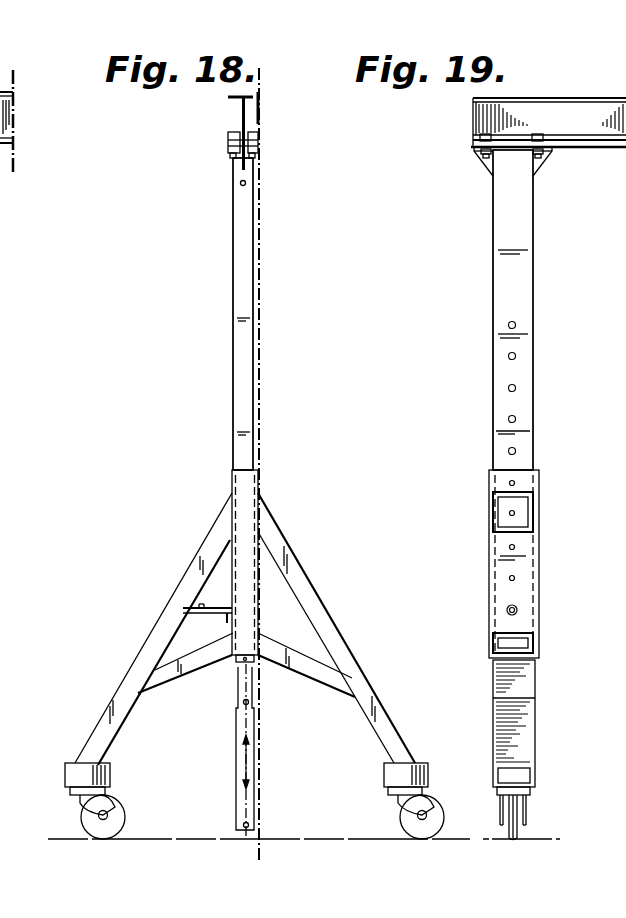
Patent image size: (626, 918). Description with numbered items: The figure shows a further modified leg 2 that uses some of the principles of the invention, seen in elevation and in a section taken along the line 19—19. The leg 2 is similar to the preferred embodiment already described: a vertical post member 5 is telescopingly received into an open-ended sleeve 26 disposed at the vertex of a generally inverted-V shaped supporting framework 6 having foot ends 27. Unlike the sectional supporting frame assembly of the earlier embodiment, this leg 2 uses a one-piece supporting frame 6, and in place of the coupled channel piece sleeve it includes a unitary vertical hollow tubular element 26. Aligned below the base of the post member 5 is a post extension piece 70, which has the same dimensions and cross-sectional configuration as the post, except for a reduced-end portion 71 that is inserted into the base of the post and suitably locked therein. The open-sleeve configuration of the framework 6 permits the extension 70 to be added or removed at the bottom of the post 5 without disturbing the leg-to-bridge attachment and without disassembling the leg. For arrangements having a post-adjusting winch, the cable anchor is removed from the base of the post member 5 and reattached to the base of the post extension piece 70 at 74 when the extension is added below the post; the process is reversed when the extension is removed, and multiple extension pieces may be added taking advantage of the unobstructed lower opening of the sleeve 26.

In FIG. 18, the leg 2 is at (256, 263).
In FIG. 19, the leg 2 is at (536, 292).
In FIG. 18, the vertical post member 5 is at (255, 352).
In FIG. 19, the vertical post member 5 is at (529, 396).
In FIG. 18, the supporting framework 6 is at (310, 563).
In FIG. 19, the supporting framework 6 is at (544, 683).
In FIG. 18, the section line 19- 19 is at (232, 74).
In FIG. 18, the sleeve 26 is at (312, 474).
In FIG. 19, the sleeve 26 is at (542, 554).
In FIG. 18, the foot ends 27 is at (74, 762).
In FIG. 19, the foot ends 27 is at (539, 766).
In FIG. 18, the post extension piece 70 is at (236, 773).
In FIG. 18, the reduced-end portion 71 is at (238, 700).
In FIG. 18, the cable anchor reattachment point 74 is at (241, 825).